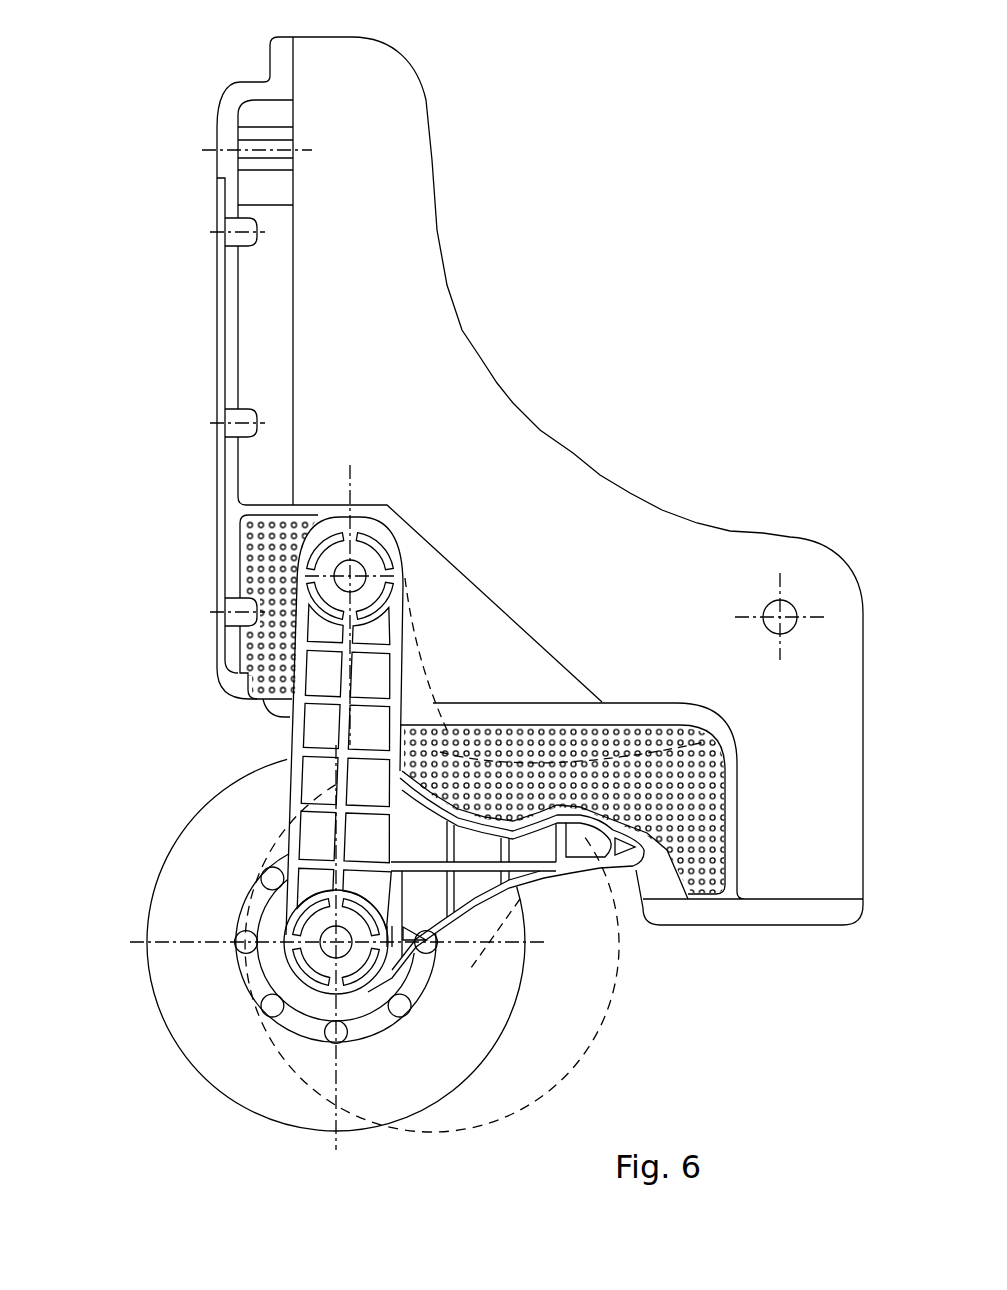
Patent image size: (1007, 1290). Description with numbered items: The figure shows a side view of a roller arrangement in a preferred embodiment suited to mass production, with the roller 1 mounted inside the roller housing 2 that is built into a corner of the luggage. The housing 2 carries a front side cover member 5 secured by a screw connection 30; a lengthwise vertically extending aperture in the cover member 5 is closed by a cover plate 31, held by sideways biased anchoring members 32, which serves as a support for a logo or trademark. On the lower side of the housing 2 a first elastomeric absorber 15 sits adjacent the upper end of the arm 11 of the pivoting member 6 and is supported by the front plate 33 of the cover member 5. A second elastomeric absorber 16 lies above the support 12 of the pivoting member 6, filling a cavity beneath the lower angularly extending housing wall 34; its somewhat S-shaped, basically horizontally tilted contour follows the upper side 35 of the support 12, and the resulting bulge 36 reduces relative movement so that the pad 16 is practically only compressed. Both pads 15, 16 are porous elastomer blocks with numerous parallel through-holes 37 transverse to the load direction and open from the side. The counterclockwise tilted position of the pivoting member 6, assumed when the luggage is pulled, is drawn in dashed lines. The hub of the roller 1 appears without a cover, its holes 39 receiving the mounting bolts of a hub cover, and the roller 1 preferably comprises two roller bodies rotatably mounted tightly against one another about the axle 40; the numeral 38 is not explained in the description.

The roller 1 is at (218, 1069).
The roller housing 2 is at (573, 450).
The front side cover member 5 is at (233, 82).
The pivoting member 6 is at (318, 993).
The arm 11 is at (300, 735).
The support 12 is at (618, 965).
The first elastomeric absorber 15 is at (313, 520).
The second elastomeric absorber 16 is at (520, 820).
The screw connection 30 is at (237, 150).
The cover plate 31 is at (222, 253).
The anchoring members 32 is at (230, 433).
The front plate 33 is at (235, 565).
The housing wall 34 is at (665, 712).
The upper side 35 is at (542, 755).
The bulge 36 is at (560, 817).
The through-holes 37 is at (713, 798).
The axle 38 is at (333, 943).
The holes 39 is at (244, 919).
The axle 40 is at (323, 945).